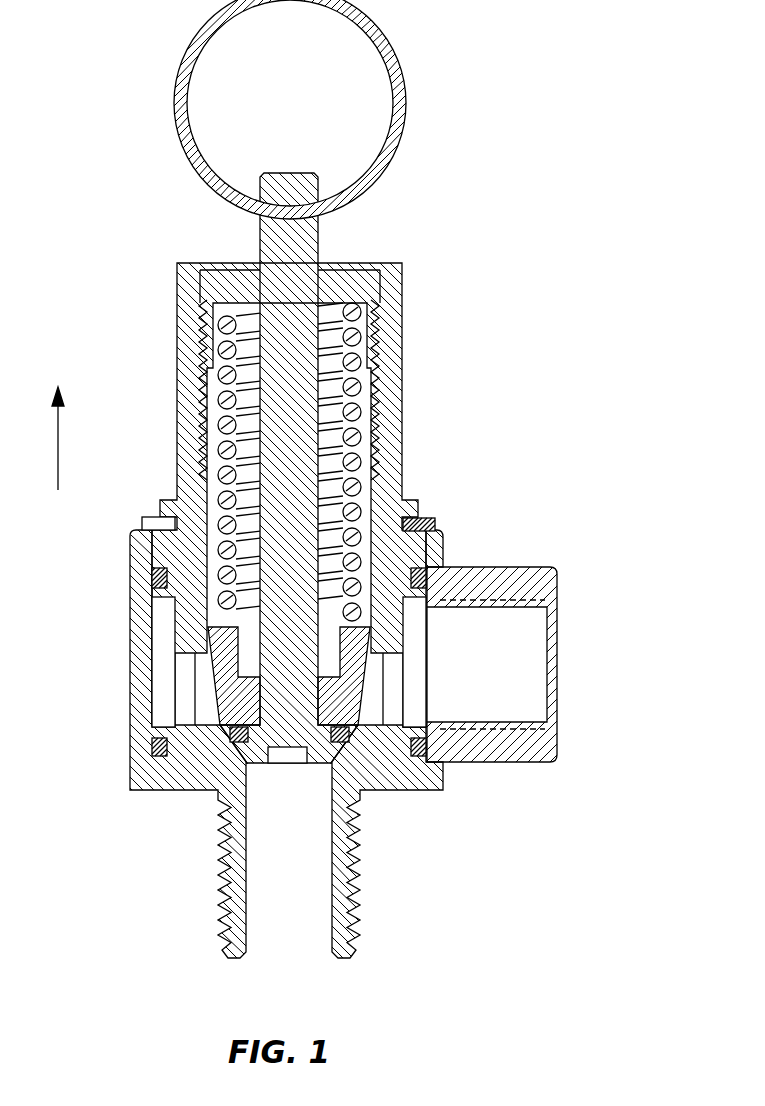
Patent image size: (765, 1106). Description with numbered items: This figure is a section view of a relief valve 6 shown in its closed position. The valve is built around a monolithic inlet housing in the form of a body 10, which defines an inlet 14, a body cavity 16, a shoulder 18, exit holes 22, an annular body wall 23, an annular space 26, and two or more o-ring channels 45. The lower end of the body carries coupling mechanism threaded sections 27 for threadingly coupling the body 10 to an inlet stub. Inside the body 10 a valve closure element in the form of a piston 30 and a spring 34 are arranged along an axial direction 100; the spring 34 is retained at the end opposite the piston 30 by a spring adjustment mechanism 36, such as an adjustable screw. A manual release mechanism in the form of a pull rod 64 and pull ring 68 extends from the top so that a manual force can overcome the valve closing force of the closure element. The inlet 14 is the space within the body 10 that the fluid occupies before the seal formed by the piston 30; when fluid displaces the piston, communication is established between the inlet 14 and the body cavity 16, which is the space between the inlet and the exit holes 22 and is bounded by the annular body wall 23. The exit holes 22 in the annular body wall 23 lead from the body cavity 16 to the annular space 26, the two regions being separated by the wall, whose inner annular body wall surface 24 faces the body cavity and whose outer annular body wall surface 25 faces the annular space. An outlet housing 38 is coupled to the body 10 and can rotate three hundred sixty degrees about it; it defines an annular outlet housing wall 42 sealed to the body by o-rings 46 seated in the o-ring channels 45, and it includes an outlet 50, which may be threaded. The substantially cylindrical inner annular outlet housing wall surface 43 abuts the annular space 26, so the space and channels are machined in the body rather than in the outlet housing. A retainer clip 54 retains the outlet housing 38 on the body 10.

The relief valve 6 is at (597, 179).
The body 10 is at (382, 396).
The inlet 14 is at (278, 894).
The body cavity 16 is at (378, 702).
The shoulder 18 is at (430, 780).
The exit holes 22 is at (180, 707).
The annular body wall 23 is at (382, 540).
The inner annular body wall surface 24 is at (403, 624).
The outer annular body wall surface 25 is at (428, 551).
The annular space 26 is at (166, 653).
The coupling mechanism threaded sections 27 is at (218, 905).
The piston 30 is at (200, 677).
The spring 34 is at (207, 390).
The spring adjustment mechanism 36 is at (362, 268).
The outlet housing 38 is at (514, 585).
The annular outlet housing wall 42 is at (143, 603).
The inner annular outlet housing wall surface 43 is at (147, 653).
The o-ring channels 45 is at (164, 570).
The o-rings 46 is at (152, 580).
The outlet 50 is at (507, 720).
The retainer clip 54 is at (427, 523).
The pull rod 64 is at (260, 248).
The pull ring 68 is at (190, 62).
The axial direction 100 is at (56, 423).